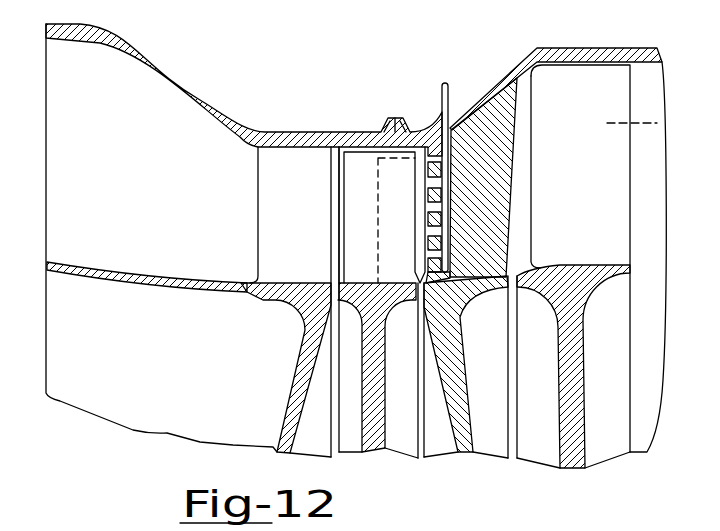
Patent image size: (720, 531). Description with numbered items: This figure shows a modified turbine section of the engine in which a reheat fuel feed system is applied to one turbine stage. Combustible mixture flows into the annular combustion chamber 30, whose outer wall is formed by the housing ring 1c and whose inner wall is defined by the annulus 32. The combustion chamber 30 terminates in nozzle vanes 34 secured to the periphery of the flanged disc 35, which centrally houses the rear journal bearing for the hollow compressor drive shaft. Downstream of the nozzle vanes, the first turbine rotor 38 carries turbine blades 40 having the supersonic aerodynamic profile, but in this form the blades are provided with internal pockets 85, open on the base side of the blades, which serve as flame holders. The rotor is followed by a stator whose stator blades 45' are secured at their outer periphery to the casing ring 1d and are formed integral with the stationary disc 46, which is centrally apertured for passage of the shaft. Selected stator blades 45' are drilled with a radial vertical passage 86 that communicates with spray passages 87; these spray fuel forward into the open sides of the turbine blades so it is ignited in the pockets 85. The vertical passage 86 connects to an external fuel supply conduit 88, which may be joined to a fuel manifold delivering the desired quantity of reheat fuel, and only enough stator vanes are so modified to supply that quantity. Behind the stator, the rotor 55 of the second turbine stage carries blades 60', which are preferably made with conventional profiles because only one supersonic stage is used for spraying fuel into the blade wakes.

The housing ring 1c is at (183, 79).
The casing ring 1d is at (540, 46).
The annular combustion chamber 30 is at (108, 166).
The annulus 32 is at (86, 278).
The nozzle vanes 34 is at (302, 215).
The flanged disc 35 is at (299, 353).
The turbine rotor 38 is at (386, 391).
The turbine vanes 40 is at (373, 165).
The stator blades 45' is at (483, 168).
The stationary disc 46 is at (465, 350).
The rotor 55 is at (587, 358).
The blades 60' is at (598, 257).
The internal pockets 85 is at (388, 170).
The vertical passage 86 is at (437, 198).
The spray passages 87 is at (443, 195).
The external fuel supply conduit 88 is at (441, 89).